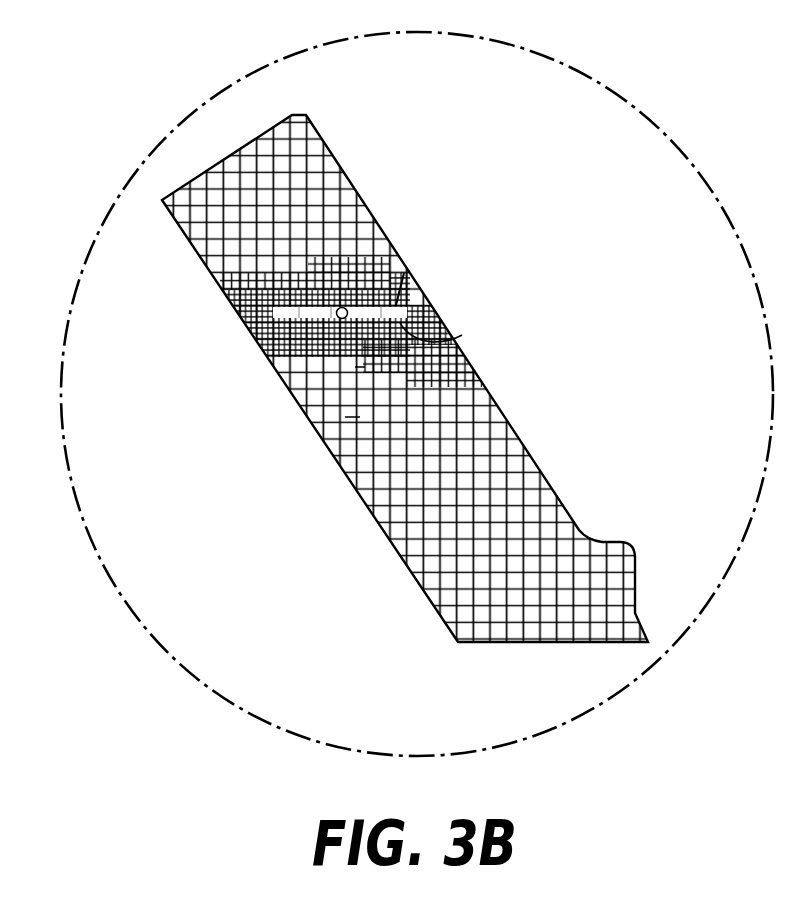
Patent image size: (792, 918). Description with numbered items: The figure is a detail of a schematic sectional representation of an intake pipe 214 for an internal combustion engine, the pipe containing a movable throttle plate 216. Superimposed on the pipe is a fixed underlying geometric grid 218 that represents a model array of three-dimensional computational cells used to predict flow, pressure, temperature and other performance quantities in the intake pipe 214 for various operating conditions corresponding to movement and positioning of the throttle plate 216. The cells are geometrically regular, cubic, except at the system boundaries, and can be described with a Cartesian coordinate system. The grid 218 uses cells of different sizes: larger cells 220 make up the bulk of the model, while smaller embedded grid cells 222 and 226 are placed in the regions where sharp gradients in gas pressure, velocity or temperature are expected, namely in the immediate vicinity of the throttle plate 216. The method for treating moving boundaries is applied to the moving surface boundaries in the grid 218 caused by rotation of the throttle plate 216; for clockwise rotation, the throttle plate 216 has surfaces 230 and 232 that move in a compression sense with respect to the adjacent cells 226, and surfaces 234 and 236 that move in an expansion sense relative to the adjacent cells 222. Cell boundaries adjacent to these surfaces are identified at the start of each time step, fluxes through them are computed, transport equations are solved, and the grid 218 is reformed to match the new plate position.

The intake pipe 214 is at (382, 515).
The throttle plate 216 is at (425, 300).
The fixed underlying geometric grid 218 is at (502, 391).
The larger cells 220 is at (345, 417).
The embedded grid cells 222 is at (253, 336).
The embedded grid cells 226 is at (355, 367).
The surface 230 is at (278, 306).
The surface 232 is at (400, 323).
The surface 234 is at (405, 272).
The surface 236 is at (307, 320).